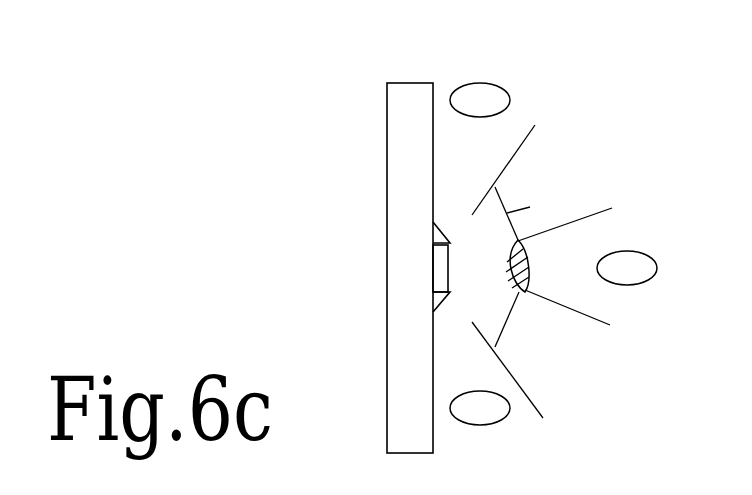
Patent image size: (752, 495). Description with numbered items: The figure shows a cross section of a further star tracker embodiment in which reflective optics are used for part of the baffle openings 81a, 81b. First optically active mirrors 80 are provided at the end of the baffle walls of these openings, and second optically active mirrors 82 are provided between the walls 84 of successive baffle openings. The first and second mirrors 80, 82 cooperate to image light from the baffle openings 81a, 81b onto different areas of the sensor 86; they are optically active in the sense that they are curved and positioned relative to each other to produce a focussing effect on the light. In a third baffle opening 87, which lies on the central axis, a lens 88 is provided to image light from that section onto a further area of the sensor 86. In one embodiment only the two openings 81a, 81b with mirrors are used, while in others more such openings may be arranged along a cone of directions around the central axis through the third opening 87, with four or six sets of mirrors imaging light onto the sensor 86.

The first optically active mirror 80 is at (433, 238).
The sensor 86 is at (442, 268).
The lens 88 is at (529, 281).
The wall 84 is at (542, 118).
The second optically active mirror 82 is at (530, 207).
The baffle opening 81a is at (480, 100).
The baffle opening 81b is at (480, 408).
The third baffle opening 87 is at (627, 268).